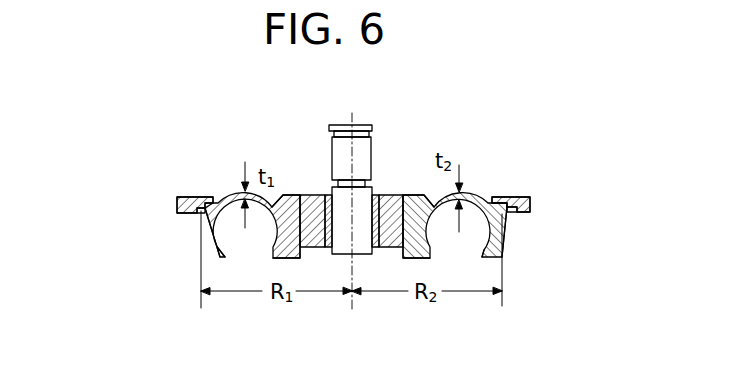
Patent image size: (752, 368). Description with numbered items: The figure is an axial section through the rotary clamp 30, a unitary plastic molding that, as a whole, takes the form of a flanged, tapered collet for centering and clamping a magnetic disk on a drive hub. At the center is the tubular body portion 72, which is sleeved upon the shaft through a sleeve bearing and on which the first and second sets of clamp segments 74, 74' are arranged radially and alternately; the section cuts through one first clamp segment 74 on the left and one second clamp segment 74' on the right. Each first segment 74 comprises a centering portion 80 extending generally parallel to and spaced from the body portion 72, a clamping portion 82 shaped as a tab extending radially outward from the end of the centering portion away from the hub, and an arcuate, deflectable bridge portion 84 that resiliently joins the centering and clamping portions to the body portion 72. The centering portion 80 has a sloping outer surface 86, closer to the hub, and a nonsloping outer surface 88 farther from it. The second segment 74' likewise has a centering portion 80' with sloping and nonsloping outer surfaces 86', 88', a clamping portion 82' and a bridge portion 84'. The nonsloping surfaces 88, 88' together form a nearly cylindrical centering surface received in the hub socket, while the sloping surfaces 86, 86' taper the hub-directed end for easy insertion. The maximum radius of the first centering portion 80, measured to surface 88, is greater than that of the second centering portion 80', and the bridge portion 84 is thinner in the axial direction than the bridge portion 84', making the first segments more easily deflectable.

The rotary clamp 30 is at (358, 201).
The central tubular body portion 72 is at (409, 196).
The first set of clamp segments 74 is at (179, 181).
The second set of clamp segments 74' is at (524, 180).
The centering portion 80 is at (174, 236).
The centering portion 80' is at (525, 251).
The clamping portion 82 is at (170, 203).
The clamping portion 82' is at (539, 201).
The bridge portion 84 is at (250, 203).
The bridge portion 84' is at (455, 203).
The sloping outer surface 86 is at (177, 270).
The sloping outer surface 86' is at (518, 254).
The nonsloping outer surface 88 is at (166, 223).
The nonsloping outer surface 88' is at (526, 225).